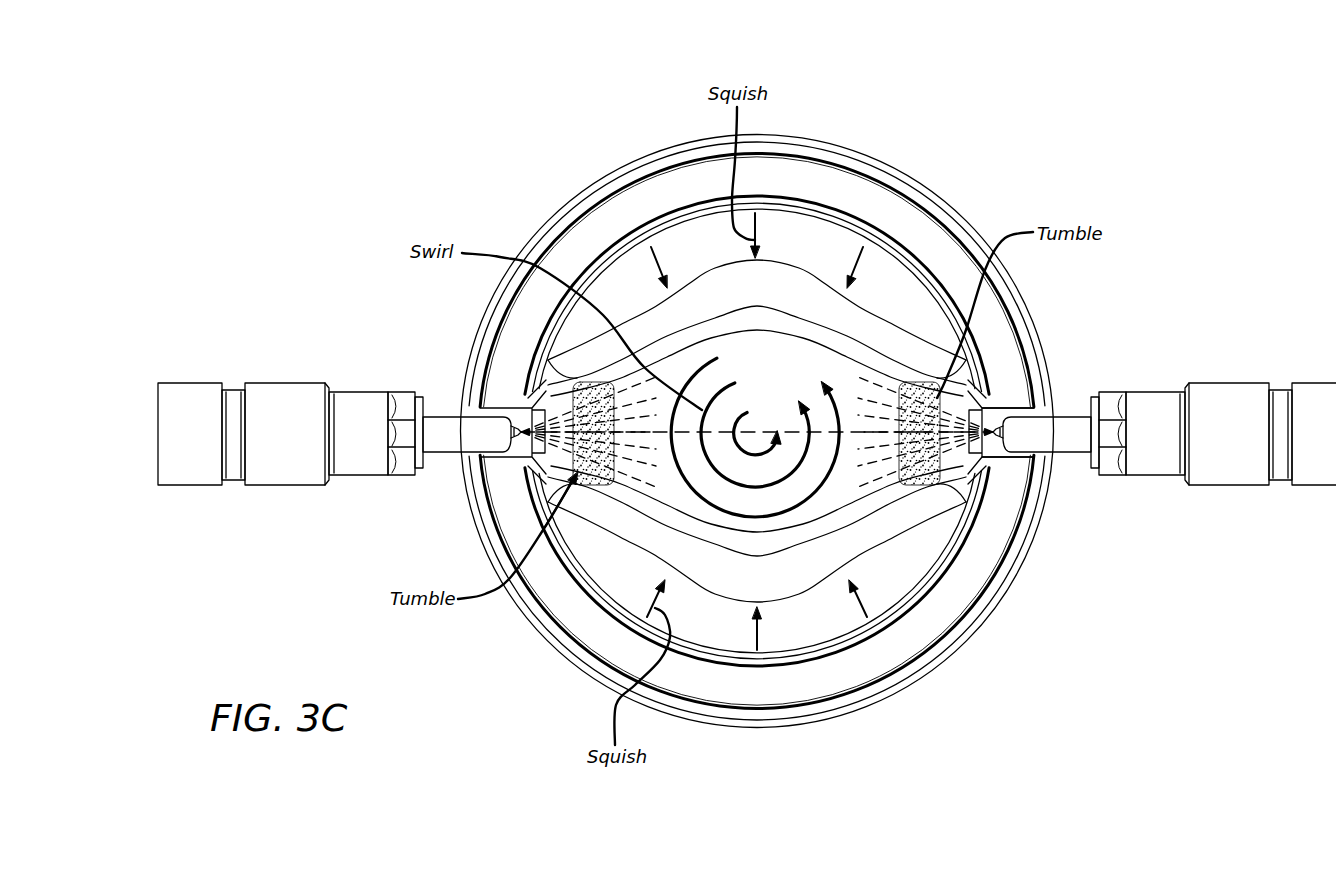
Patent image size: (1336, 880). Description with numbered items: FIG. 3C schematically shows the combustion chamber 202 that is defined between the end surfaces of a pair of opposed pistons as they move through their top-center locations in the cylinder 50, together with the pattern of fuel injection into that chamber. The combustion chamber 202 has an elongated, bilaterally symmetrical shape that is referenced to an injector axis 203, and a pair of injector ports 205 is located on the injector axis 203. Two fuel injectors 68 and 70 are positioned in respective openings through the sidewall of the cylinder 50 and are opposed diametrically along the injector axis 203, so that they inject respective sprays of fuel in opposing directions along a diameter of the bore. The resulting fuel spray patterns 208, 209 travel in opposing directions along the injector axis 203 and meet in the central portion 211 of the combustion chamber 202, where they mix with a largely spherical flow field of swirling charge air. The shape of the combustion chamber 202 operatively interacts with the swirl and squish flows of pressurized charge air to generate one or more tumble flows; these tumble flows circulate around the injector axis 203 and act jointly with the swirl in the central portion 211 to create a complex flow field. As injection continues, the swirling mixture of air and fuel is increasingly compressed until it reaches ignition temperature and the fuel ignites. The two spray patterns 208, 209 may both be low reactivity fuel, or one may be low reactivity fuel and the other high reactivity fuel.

The cylinder 50 is at (772, 200).
The fuel injector nozzle 68 is at (1053, 423).
The fuel injector nozzle 70 is at (452, 440).
The combustion chamber 202 is at (813, 337).
The injector axis 203 is at (668, 432).
The injector ports 205 is at (987, 443).
The fuel spray pattern 208 is at (875, 393).
The fuel spray pattern 209 is at (628, 473).
The central portion of the combustion chamber 211 is at (714, 379).